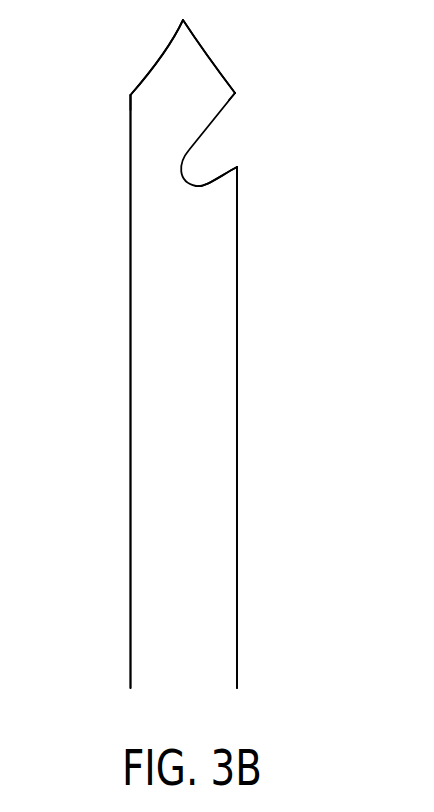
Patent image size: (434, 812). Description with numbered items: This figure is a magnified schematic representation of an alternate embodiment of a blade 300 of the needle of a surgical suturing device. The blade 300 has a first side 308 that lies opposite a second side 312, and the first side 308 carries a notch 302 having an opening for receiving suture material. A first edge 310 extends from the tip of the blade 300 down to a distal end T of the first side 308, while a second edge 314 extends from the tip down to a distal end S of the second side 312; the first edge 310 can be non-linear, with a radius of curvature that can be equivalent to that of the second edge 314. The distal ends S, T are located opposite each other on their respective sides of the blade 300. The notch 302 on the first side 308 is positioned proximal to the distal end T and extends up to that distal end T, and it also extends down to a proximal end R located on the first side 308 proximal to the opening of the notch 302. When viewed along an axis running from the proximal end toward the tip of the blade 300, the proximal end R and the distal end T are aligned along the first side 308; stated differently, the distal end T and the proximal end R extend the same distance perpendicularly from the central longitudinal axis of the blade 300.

The blade 300 is at (192, 643).
The notch 302 is at (263, 152).
The first side 308 is at (237, 413).
The first edge 310 is at (198, 50).
The second side 312 is at (130, 502).
The second edge 314 is at (166, 52).
The distal end of the second side S is at (130, 95).
The distal end of the first side T is at (237, 93).
The proximal end of the notch R is at (237, 167).